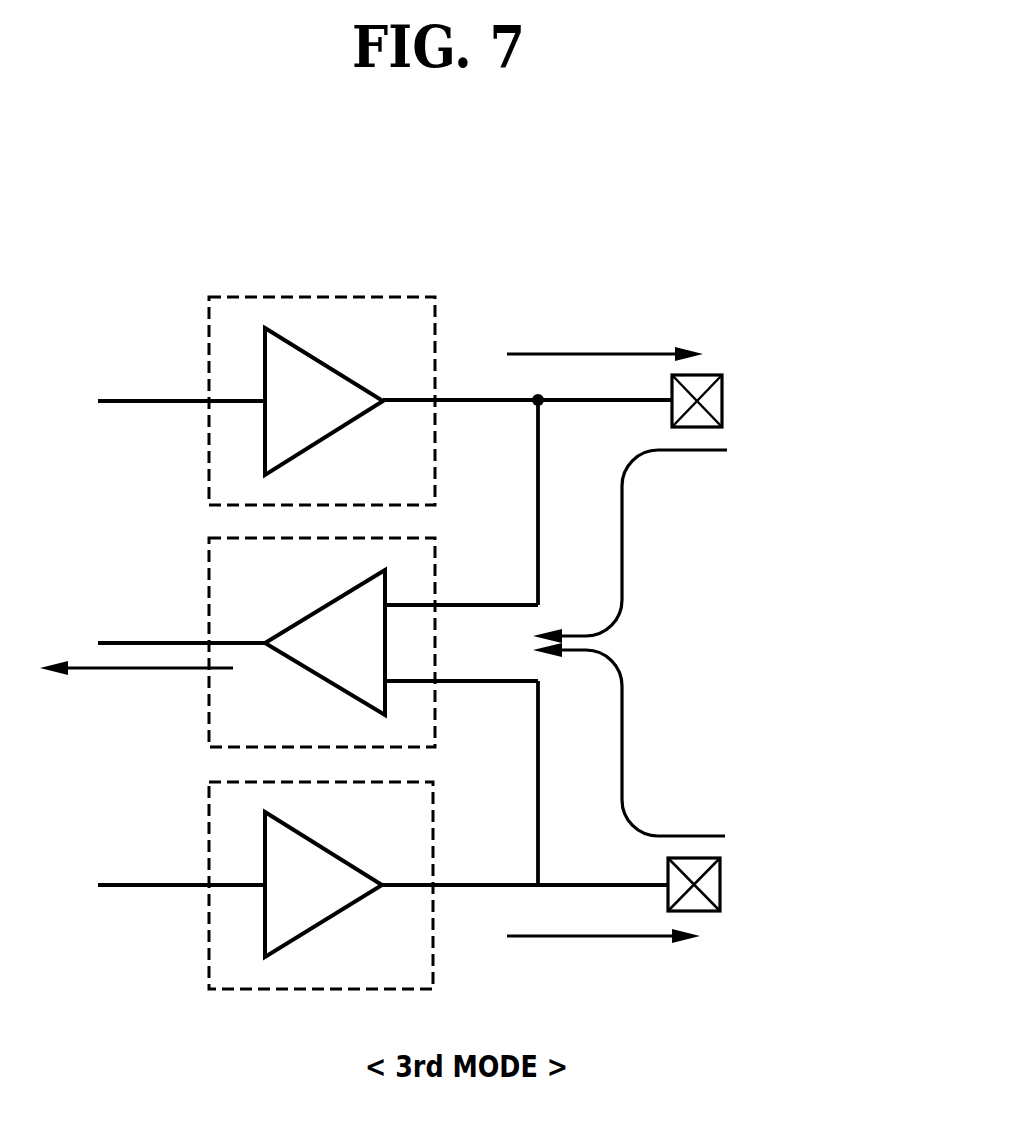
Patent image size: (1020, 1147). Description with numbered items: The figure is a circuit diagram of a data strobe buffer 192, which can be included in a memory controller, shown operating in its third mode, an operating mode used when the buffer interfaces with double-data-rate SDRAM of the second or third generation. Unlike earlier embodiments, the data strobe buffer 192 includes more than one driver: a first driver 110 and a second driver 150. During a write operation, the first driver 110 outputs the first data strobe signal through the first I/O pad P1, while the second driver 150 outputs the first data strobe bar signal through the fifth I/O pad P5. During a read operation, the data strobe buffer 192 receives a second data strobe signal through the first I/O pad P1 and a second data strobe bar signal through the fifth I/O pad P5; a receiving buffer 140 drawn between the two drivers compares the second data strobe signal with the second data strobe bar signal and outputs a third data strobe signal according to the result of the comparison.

The first driver 110 is at (383, 297).
The input receiver / differential buffer (DQS_3 receiver) 140 is at (410, 538).
The second driver 150 is at (408, 782).
The data strobe buffer 192 is at (724, 215).
The first I/O pad P1 is at (722, 400).
The fifth I/O pad P5 is at (720, 885).